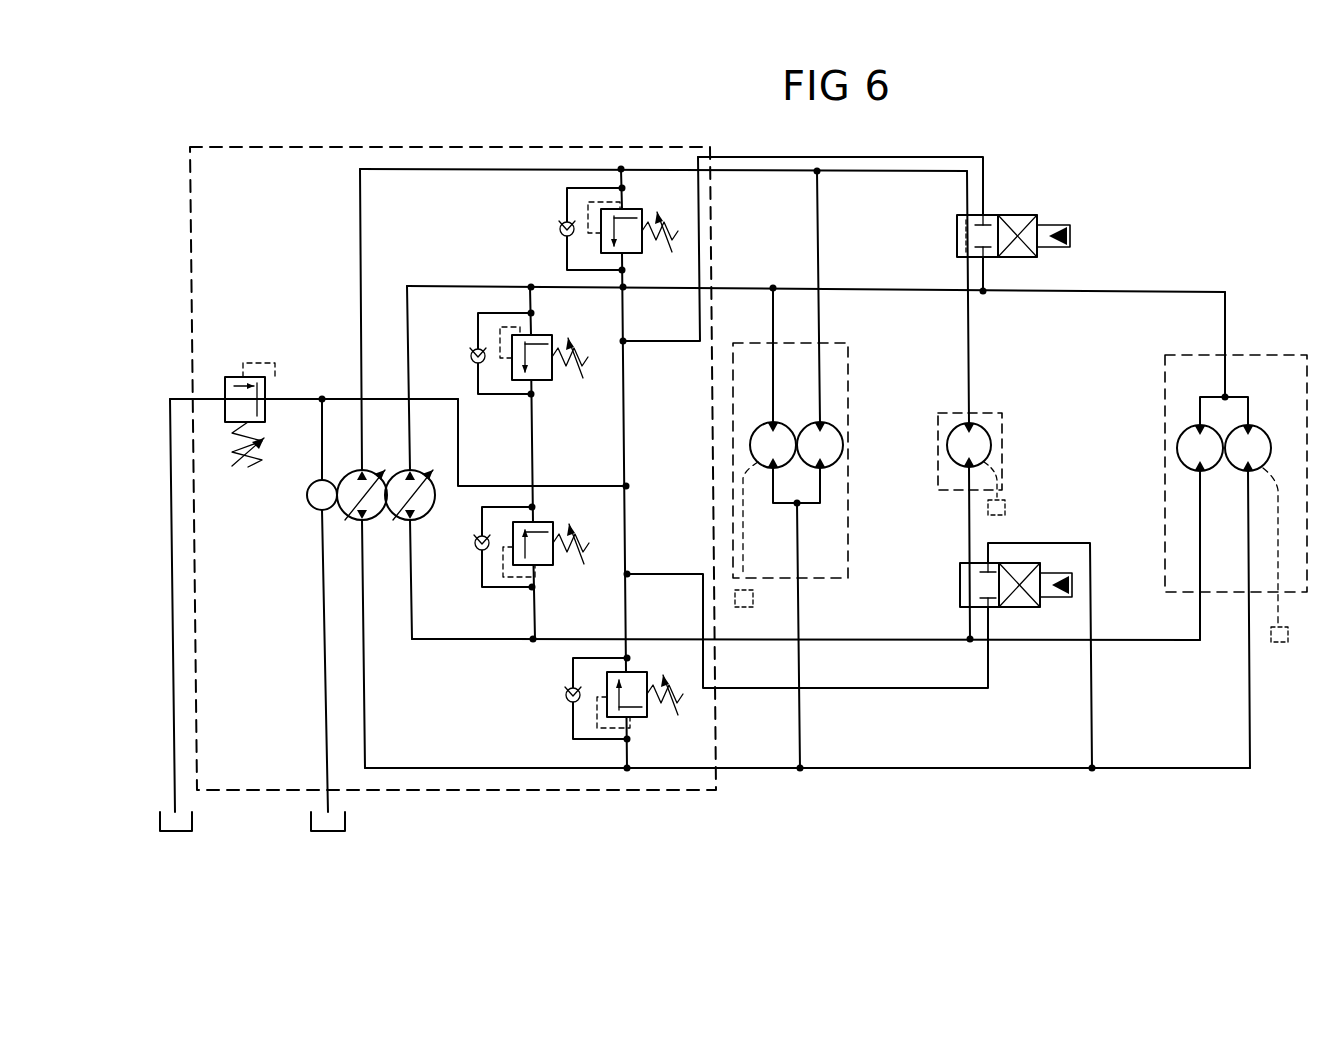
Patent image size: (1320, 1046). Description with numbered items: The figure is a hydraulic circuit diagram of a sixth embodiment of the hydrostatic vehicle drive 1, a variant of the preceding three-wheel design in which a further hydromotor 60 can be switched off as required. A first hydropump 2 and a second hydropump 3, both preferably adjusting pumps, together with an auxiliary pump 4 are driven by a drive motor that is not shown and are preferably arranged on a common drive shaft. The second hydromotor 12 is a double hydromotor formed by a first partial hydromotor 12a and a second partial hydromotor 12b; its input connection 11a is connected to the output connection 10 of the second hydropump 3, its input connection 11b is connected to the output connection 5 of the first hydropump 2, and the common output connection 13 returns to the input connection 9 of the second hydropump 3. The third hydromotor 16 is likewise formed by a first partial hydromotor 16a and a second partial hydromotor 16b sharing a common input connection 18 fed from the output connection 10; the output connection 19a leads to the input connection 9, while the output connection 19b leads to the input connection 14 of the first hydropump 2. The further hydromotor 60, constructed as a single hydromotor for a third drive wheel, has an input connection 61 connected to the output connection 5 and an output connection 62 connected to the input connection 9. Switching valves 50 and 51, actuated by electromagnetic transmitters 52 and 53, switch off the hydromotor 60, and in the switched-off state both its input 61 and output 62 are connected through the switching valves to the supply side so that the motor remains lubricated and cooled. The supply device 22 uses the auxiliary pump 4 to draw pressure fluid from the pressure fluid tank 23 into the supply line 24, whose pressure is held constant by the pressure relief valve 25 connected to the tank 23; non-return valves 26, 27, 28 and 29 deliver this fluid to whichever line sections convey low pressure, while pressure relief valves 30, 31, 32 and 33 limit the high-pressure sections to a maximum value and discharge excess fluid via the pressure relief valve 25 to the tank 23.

The hydrostatic vehicle drive 1 is at (995, 140).
The first hydropump 2 is at (372, 520).
The second hydropump 3 is at (395, 468).
The auxiliary pump 4 is at (318, 512).
The output connection of first hydropump 5 is at (360, 468).
The input connection of second hydropump 9 is at (415, 520).
The output connection of second hydropump 10 is at (418, 468).
The input connection of first partial hydromotor 12a 11a is at (775, 345).
The input connection of second partial hydromotor 12b 11b is at (822, 343).
The second hydromotor 12 is at (830, 540).
The first partial hydromotor 12a is at (765, 445).
The second partial hydromotor 12b is at (832, 444).
The common output connection 13 is at (800, 580).
The input connection of first hydropump 14 is at (360, 520).
The third hydromotor 16 is at (1222, 538).
The first partial hydromotor 16a is at (1190, 450).
The second partial hydromotor 16b is at (1258, 440).
The common input connection 18 is at (1228, 395).
The output connection of first partial hydromotor 16a 19a is at (1200, 593).
The output connection of second partial hydromotor 16b 19b is at (1247, 597).
The supply device 22 is at (262, 500).
The pressure fluid tank 23 is at (175, 832).
The supply line 24 is at (560, 486).
The pressure relief valve 25 is at (237, 375).
The non-return valve 26 is at (472, 350).
The non-return valve 27 is at (480, 555).
The non-return valve 28 is at (560, 229).
The non-return valve 29 is at (565, 697).
The pressure relief valve 30 is at (547, 362).
The pressure relief valve 31 is at (545, 560).
The pressure relief valve 32 is at (630, 212).
The pressure relief valve 33 is at (640, 718).
The switching valve 50 is at (1050, 200).
The switching valve 51 is at (1018, 620).
The electromagnetic transmitter 52 is at (1072, 236).
The electromagnetic transmitter 53 is at (1052, 563).
The further hydromotor 60 is at (978, 437).
The input connection of further hydromotor 61 is at (970, 418).
The output connection of further hydromotor 62 is at (968, 492).